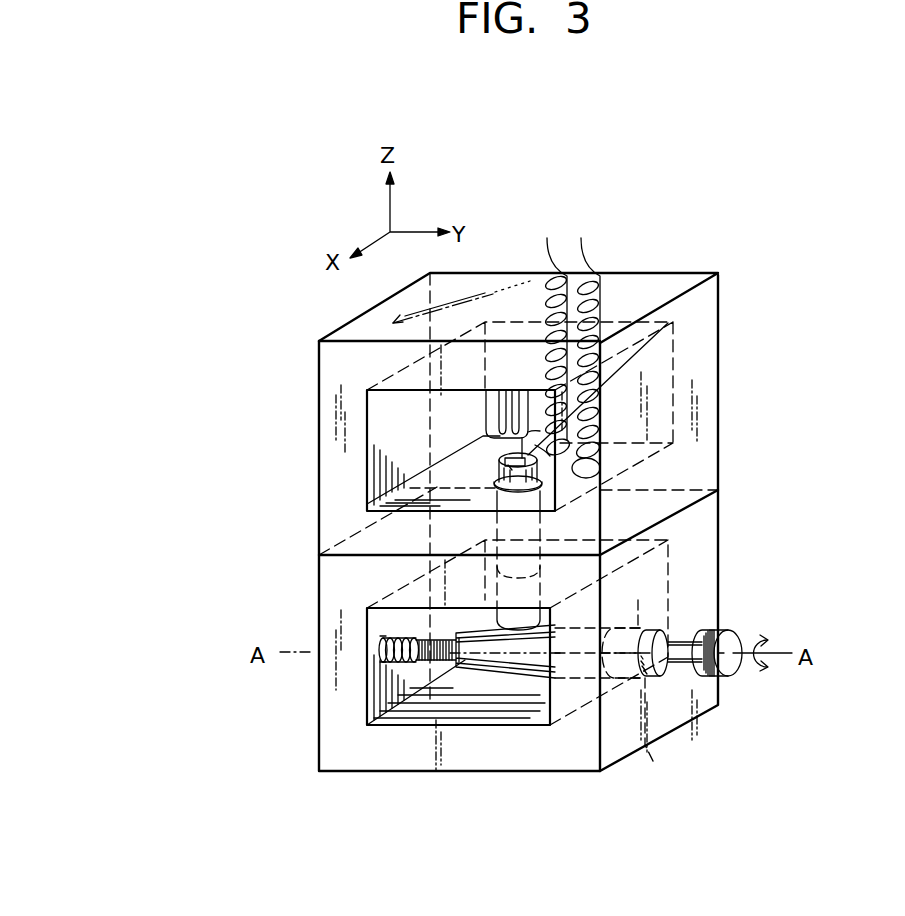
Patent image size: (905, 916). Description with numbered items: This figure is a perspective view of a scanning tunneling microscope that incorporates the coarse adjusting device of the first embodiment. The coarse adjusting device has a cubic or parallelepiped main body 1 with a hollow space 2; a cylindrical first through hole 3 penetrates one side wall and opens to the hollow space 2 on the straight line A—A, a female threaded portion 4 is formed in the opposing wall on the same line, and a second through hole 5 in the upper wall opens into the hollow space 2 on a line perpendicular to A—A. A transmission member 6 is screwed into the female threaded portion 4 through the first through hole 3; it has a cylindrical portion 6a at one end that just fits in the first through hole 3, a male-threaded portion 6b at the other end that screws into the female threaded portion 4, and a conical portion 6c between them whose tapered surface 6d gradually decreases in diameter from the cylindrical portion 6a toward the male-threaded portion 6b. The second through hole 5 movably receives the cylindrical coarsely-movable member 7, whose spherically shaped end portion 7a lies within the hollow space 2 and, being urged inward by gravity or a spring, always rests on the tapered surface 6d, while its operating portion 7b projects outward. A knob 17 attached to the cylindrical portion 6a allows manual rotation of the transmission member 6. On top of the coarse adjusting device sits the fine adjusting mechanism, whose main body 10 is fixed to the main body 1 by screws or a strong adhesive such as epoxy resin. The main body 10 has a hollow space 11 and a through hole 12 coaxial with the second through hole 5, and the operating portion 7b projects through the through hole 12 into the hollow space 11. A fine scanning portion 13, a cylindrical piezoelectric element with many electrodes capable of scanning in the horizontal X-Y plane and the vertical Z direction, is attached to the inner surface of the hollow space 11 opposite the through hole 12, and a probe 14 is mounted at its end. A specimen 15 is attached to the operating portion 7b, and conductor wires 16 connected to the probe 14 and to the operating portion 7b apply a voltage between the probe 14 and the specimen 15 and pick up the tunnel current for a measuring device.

The main body 1 is at (700, 542).
The hollow space 2 is at (395, 623).
The first through hole 3 is at (634, 697).
The female threaded portion 4 is at (400, 667).
The second through hole 5 is at (490, 565).
The transmission member 6 is at (492, 727).
The cylindrical portion 6a is at (667, 632).
The male-threaded portion 6b is at (427, 662).
The conical portion 6c is at (482, 657).
The tapered surface 6d is at (535, 660).
The coarsely-movable member 7 is at (497, 479).
The end portion 7a is at (512, 655).
The operating portion 7b is at (512, 474).
The main body of fine adjusting mechanism 10 is at (720, 353).
The hollow space 11 is at (395, 437).
The through hole 12 is at (495, 508).
The fine scanning portion 13 is at (600, 390).
The probe 14 is at (528, 432).
The specimen 15 is at (535, 445).
The conductor wires 16 is at (600, 232).
The knob 17 is at (732, 638).